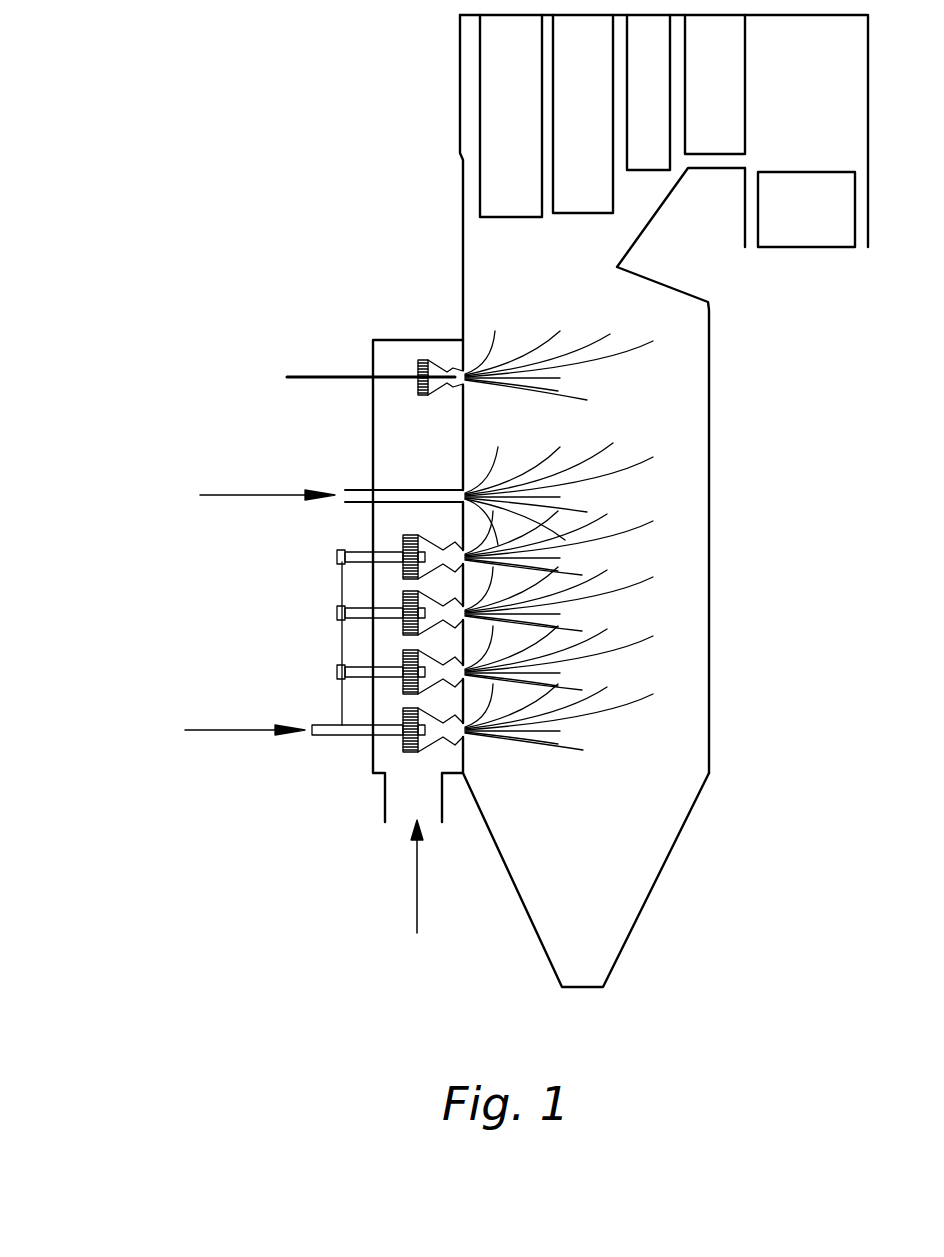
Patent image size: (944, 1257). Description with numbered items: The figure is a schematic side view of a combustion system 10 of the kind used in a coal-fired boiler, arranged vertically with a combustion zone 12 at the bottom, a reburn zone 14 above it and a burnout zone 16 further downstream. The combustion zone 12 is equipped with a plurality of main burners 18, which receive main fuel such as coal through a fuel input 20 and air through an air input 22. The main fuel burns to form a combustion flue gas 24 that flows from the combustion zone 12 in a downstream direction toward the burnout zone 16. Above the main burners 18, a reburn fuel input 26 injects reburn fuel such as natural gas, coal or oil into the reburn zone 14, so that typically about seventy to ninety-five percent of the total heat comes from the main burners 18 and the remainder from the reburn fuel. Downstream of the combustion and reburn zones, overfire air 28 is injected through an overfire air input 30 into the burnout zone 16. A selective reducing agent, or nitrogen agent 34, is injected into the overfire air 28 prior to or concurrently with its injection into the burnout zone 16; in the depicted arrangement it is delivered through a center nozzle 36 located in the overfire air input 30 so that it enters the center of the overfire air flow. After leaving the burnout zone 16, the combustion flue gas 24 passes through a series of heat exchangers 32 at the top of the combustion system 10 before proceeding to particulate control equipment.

The combustion system 10 is at (792, 977).
The combustion zone 12 is at (677, 605).
The reburn zone 14 is at (664, 441).
The burnout zone 16 is at (664, 307).
The main burners 18 is at (328, 553).
The fuel input 20 is at (337, 740).
The air input 22 is at (396, 820).
The combustion flue gas 24 is at (637, 643).
The reburn fuel input 26 is at (353, 508).
The overfire air 28 is at (630, 356).
The overfire air input 30 is at (420, 358).
The heat exchangers 32 is at (572, 62).
The nitrogen agent 34 is at (328, 378).
The center nozzle 36 is at (452, 364).